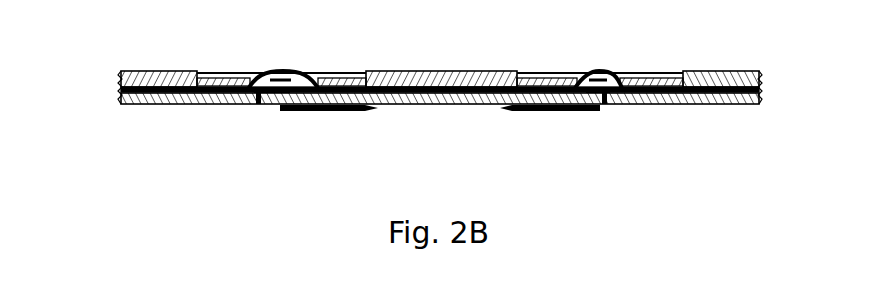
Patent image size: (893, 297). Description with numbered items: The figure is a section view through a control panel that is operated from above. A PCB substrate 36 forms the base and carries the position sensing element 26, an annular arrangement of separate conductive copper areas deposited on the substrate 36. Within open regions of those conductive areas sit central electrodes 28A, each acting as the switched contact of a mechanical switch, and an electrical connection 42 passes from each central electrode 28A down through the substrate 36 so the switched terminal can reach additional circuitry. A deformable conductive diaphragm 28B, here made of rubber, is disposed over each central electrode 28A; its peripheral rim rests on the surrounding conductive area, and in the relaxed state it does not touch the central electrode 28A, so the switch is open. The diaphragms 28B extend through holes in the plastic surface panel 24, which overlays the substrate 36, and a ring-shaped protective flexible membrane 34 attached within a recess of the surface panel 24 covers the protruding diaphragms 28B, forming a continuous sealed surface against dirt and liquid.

The surface panel 24 is at (121, 72).
The position sensing element 26 is at (214, 101).
The central electrode 28A is at (258, 100).
The deformable conductive diaphragm 28B is at (317, 54).
The protective flexible membrane 34 is at (222, 75).
The PCB substrate 36 is at (746, 110).
The electrical connection 42 is at (322, 112).